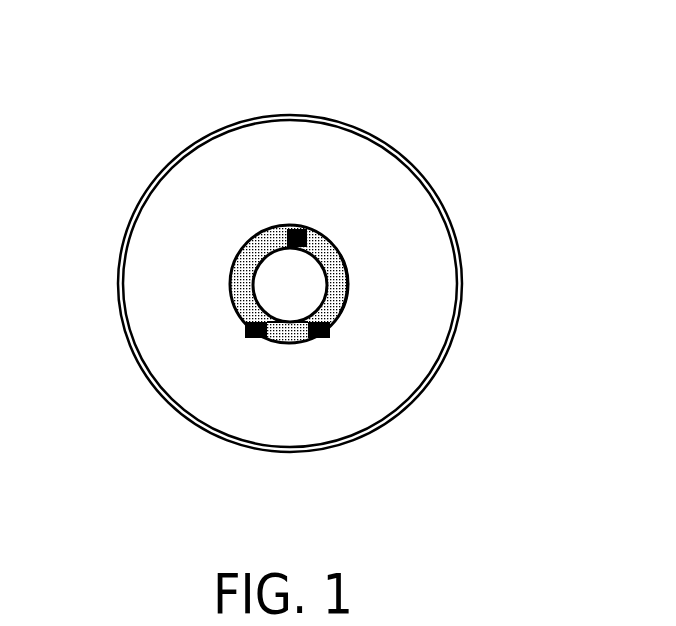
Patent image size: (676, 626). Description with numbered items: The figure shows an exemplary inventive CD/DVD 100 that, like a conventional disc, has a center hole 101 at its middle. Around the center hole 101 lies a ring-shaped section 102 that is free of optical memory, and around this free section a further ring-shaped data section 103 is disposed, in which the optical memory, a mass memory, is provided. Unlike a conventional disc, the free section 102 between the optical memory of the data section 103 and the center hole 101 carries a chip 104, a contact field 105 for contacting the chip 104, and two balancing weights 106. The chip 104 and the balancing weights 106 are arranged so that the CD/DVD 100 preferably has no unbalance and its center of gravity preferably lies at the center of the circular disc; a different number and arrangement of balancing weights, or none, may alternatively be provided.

The CD/DVD 100 is at (417, 117).
The center hole 101 is at (290, 285).
The ring-shaped section free of optical memory 102 is at (232, 273).
The ring-shaped data section 103 is at (143, 278).
The chip 104 is at (327, 238).
The contact field 105 is at (347, 290).
The balancing weights 106 is at (250, 338).